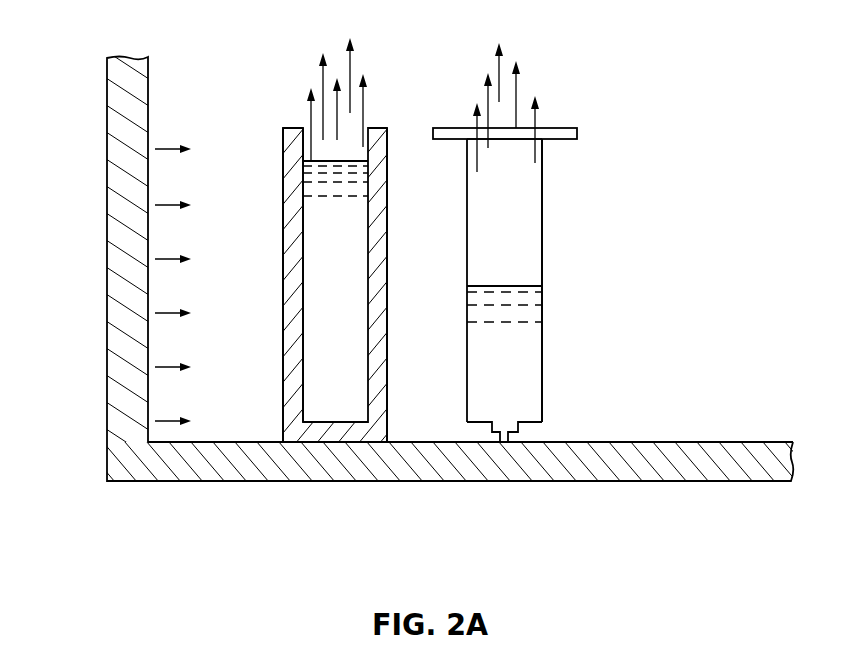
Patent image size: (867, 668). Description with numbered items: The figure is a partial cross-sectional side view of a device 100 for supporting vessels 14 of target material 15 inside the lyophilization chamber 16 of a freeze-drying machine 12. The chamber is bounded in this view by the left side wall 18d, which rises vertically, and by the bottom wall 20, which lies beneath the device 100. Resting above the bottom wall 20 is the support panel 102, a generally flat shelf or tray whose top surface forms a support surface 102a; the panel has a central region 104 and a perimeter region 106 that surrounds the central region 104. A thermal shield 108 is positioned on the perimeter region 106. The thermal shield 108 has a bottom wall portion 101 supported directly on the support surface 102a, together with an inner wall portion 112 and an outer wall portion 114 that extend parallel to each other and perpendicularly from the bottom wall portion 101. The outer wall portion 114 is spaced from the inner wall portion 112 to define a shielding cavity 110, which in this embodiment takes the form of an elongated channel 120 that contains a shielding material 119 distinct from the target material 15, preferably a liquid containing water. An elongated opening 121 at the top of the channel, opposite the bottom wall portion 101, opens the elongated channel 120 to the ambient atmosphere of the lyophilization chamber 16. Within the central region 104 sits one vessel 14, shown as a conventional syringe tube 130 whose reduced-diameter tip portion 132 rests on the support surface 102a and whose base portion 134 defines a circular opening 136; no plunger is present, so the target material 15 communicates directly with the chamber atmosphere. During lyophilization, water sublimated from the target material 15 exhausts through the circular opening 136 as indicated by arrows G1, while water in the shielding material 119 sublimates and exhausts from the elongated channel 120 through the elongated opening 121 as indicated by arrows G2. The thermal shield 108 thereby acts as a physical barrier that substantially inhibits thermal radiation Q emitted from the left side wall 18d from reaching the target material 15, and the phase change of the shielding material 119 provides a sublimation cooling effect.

The freeze-drying machine 12 is at (104, 147).
The left side wall 18d is at (148, 100).
The thermal radiation Q is at (158, 262).
The device 100 is at (279, 124).
The thermal shield 108 is at (389, 246).
The inner wall portion 112 is at (375, 331).
The outer wall portion 114 is at (297, 272).
The shielding cavity 110 is at (282, 387).
The elongated channel 120 is at (300, 246).
The shielding material 119 is at (321, 402).
The bottom wall portion 101 is at (355, 428).
The elongated opening 121 is at (367, 128).
The arrows G2 is at (352, 62).
The syringe tube 130 is at (527, 190).
The base portion 134 is at (577, 128).
The circular opening 136 is at (527, 135).
The vessel 14 is at (546, 267).
The target material 15 is at (508, 346).
The tip portion 132 is at (512, 423).
The arrows G1 is at (502, 55).
The lyophilization chamber 16 is at (686, 157).
The support panel 102 is at (657, 462).
The bottom wall 20 is at (748, 462).
The central region 104 is at (632, 441).
The support surface 102a is at (672, 441).
The perimeter region 106 is at (258, 440).